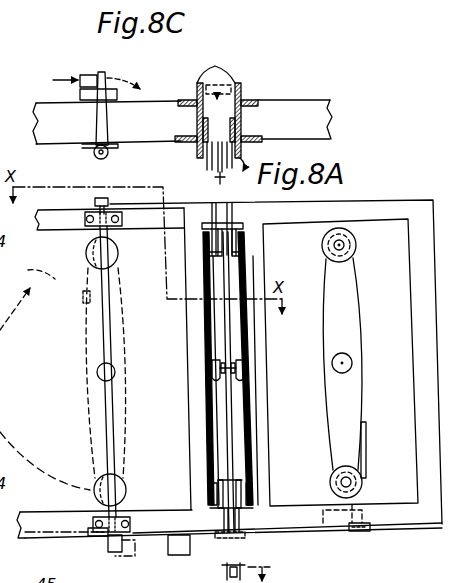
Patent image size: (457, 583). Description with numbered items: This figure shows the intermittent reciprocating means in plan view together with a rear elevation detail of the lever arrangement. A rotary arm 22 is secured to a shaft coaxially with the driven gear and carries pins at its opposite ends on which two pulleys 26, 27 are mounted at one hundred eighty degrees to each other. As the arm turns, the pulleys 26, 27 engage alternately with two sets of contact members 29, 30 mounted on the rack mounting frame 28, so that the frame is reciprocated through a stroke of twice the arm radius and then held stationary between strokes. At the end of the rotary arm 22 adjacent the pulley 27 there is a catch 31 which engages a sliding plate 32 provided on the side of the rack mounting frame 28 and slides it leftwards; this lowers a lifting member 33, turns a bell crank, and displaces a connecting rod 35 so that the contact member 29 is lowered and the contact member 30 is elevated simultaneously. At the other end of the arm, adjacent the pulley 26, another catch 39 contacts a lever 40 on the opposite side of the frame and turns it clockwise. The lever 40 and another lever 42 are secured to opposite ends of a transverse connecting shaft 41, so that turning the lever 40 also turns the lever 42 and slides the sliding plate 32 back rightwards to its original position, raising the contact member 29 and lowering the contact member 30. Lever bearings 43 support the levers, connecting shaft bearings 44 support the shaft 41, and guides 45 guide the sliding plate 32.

In FIG. 8A, the rotary arm 22 is at (90, 438).
In FIG. 8A, the pulley 26 is at (120, 253).
In FIG. 8A, the pulley 27 is at (128, 492).
In FIG. 8C, the rack mounting frame 28 is at (183, 99).
In FIG. 8A, the rack mounting frame 28 is at (393, 200).
In FIG. 8A, the contact members 29 is at (252, 438).
In FIG. 8C, the contact member 30 is at (218, 115).
In FIG. 8A, the contact member 30 is at (203, 330).
In FIG. 8A, the catch 31 is at (362, 511).
In FIG. 8A, the sliding plate 32 is at (297, 528).
In FIG. 8A, the lifting member 33 is at (239, 533).
In FIG. 8A, the connecting rod 35 is at (228, 417).
In FIG. 8C, the catch 39 is at (78, 76).
In FIG. 8A, the catch 39 is at (97, 208).
In FIG. 8C, the lever 40 is at (93, 124).
In FIG. 8A, the lever 40 is at (111, 202).
In FIG. 8A, the transverse connecting shaft 41 is at (98, 313).
In FIG. 8A, the lever 42 is at (110, 553).
In FIG. 8A, the lever bearings 43 is at (212, 387).
In FIG. 8A, the connecting shaft bearings 44 is at (85, 226).
In FIG. 8A, the guides 45 is at (95, 536).